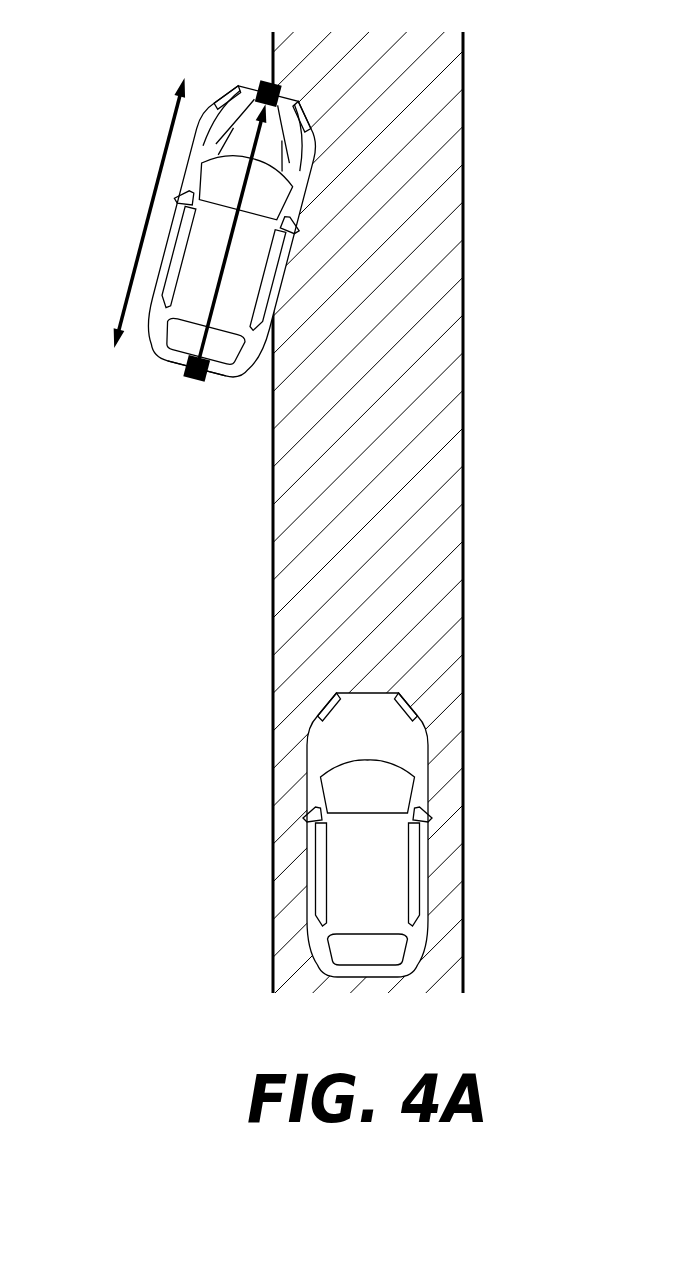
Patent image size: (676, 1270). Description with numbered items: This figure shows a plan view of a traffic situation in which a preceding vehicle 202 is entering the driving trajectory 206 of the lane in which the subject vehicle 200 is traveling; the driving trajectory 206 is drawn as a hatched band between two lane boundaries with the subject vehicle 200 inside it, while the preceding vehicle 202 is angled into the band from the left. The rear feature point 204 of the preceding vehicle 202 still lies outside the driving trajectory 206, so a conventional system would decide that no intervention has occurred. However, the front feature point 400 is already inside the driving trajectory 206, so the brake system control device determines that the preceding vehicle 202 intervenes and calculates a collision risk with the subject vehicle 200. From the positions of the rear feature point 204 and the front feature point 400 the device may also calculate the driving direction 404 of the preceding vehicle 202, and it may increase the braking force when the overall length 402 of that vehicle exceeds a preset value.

The subject vehicle 200 is at (426, 882).
The preceding vehicle 202 is at (223, 110).
The rear feature point 204 is at (197, 384).
The driving trajectory 206 is at (453, 528).
The front feature point 400 is at (268, 81).
The overall length 402 is at (160, 148).
The driving direction 404 is at (192, 355).